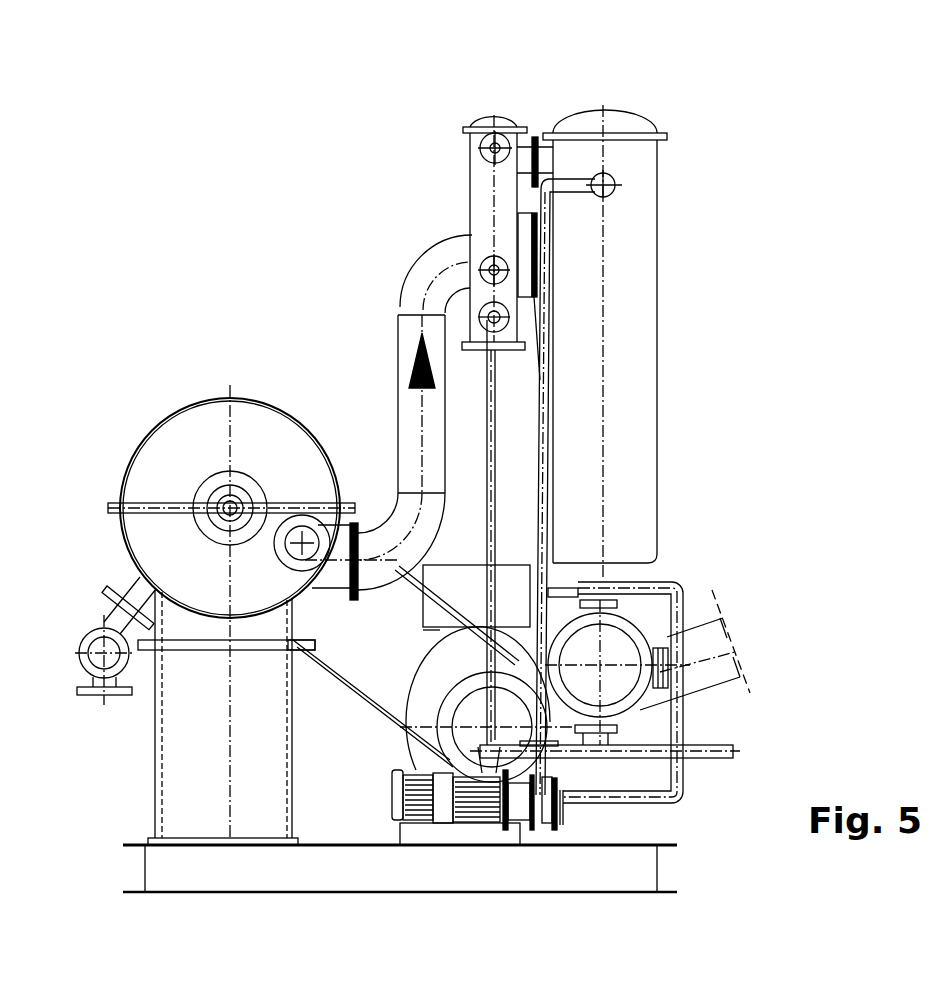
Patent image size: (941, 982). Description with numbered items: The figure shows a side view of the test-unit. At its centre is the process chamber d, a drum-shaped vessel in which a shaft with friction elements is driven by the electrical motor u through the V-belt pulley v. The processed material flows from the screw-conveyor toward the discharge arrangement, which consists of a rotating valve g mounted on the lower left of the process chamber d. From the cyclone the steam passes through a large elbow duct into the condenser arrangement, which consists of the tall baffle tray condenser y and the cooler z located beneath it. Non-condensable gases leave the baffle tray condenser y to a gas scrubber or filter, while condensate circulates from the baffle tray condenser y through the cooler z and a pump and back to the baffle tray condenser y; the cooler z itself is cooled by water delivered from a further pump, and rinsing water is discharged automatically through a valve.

The process chamber d is at (254, 508).
The rotating valve g is at (92, 625).
The baffle tray condenser y is at (657, 160).
The cooler z is at (617, 672).
The electrical motor u is at (423, 673).
The V-belt pulley v is at (353, 690).